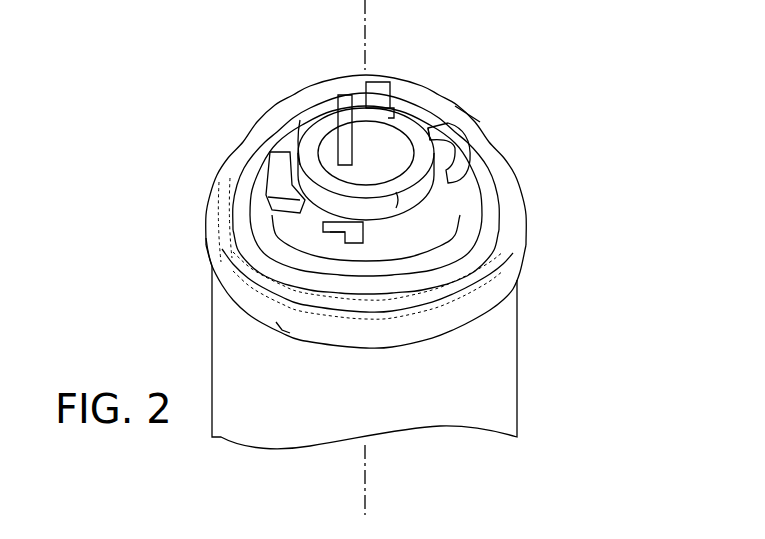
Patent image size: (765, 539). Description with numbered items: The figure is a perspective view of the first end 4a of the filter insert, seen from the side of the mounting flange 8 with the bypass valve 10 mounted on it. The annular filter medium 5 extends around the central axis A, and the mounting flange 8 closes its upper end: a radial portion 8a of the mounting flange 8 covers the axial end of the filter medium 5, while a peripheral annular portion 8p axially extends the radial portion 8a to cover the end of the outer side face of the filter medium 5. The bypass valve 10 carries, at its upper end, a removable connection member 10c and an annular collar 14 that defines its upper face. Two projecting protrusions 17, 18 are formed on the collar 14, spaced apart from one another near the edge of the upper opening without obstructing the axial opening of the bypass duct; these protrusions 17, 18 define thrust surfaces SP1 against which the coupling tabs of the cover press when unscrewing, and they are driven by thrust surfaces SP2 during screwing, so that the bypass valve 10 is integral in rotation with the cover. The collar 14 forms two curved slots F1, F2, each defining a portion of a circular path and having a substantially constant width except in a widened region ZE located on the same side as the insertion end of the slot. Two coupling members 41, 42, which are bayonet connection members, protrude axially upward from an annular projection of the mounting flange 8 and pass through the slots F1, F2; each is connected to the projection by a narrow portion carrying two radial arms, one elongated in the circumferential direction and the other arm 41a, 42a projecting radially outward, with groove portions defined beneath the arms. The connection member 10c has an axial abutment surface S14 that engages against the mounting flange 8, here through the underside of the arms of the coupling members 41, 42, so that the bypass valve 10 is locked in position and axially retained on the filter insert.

The filter medium 5 is at (490, 372).
The mounting flange 8 is at (524, 250).
The radial portion of the mounting flange 8a is at (233, 208).
The peripheral annular portion of the mounting flange 8p is at (281, 322).
The bypass valve 10 is at (497, 187).
The connection member of the bypass valve 10c is at (470, 118).
The collar 14 is at (407, 243).
The protrusion 17 is at (380, 118).
The protrusion 18 is at (357, 178).
The coupling member 41 is at (282, 172).
The arm of the coupling member 41a is at (273, 202).
The coupling member 42 is at (450, 160).
The arm of the coupling member 42a is at (450, 118).
The first end of the filter insert 4a is at (200, 250).
The central axis A is at (367, 490).
The slot F1 is at (318, 232).
The slot F2 is at (408, 117).
The axial abutment surface S14 is at (310, 222).
The thrust surface SP1 is at (398, 198).
The thrust surface SP2 is at (308, 138).
The widened region ZE is at (348, 222).